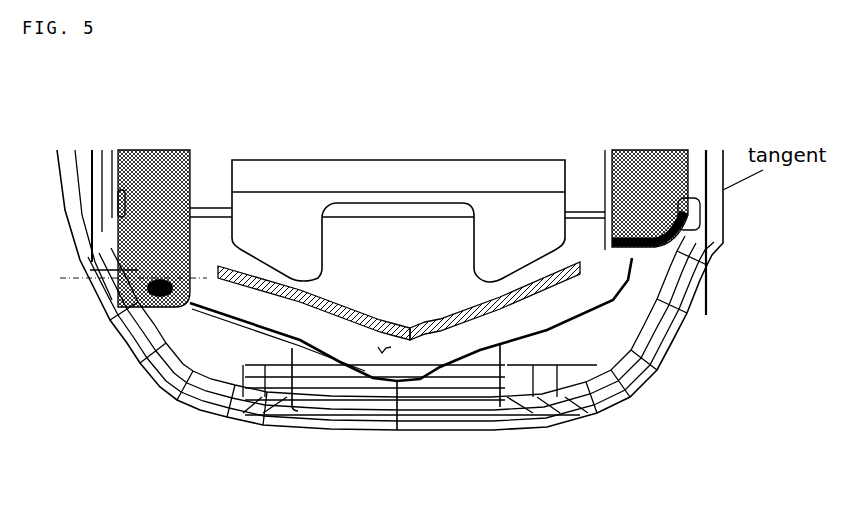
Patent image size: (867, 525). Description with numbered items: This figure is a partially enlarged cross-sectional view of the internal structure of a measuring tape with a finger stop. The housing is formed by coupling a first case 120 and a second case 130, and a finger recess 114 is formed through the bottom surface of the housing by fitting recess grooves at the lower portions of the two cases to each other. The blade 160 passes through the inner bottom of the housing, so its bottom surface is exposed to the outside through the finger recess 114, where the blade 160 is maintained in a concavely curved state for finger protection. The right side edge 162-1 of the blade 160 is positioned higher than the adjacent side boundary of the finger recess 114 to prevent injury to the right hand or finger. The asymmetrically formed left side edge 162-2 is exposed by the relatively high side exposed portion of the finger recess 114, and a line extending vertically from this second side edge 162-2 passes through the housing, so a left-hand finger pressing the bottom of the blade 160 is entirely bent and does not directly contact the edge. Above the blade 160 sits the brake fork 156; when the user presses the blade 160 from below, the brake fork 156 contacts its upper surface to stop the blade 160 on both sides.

The first case 120 is at (145, 155).
The second case 130 is at (640, 158).
The brake fork 156 is at (505, 235).
The right side edge 162-1 is at (167, 367).
The left side edge 162-2 is at (660, 360).
The finger recess 114 is at (385, 356).
The blade 160 is at (488, 415).